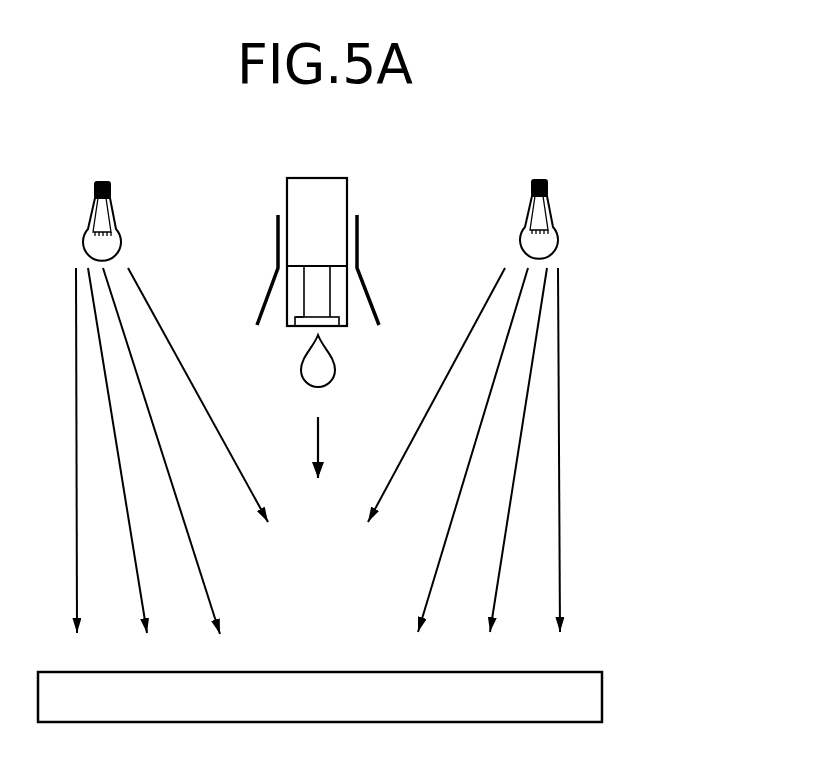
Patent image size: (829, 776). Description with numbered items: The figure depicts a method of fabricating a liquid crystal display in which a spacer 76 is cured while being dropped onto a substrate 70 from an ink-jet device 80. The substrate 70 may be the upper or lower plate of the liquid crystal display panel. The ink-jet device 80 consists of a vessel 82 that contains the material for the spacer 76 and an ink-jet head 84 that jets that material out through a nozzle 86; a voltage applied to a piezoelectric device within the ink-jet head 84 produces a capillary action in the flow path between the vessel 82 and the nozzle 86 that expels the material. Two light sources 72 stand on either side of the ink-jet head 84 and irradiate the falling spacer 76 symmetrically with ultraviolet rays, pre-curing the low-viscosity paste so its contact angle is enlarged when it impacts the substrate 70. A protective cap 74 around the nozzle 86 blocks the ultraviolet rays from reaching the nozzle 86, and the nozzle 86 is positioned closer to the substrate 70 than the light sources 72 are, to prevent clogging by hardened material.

The substrate 70 is at (596, 696).
The light source 72 is at (558, 232).
The protective cap 74 is at (357, 245).
The spacer 76 is at (328, 367).
The ink-jet device 80 is at (316, 267).
The vessel 82 is at (343, 202).
The ink-jet head 84 is at (343, 293).
The nozzle 86 is at (306, 310).